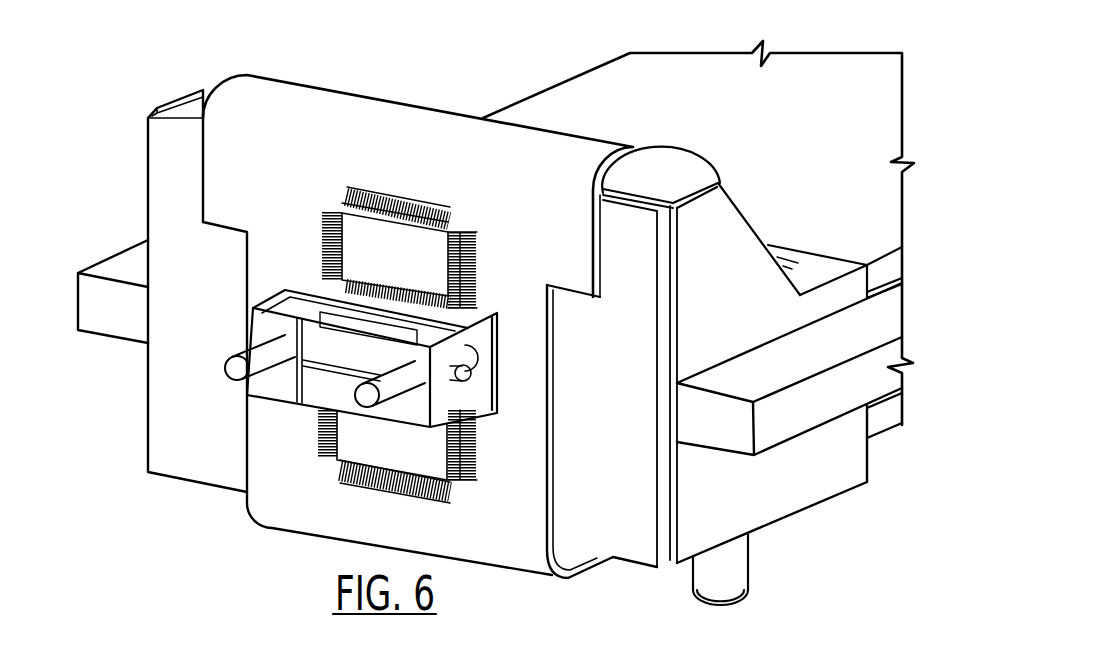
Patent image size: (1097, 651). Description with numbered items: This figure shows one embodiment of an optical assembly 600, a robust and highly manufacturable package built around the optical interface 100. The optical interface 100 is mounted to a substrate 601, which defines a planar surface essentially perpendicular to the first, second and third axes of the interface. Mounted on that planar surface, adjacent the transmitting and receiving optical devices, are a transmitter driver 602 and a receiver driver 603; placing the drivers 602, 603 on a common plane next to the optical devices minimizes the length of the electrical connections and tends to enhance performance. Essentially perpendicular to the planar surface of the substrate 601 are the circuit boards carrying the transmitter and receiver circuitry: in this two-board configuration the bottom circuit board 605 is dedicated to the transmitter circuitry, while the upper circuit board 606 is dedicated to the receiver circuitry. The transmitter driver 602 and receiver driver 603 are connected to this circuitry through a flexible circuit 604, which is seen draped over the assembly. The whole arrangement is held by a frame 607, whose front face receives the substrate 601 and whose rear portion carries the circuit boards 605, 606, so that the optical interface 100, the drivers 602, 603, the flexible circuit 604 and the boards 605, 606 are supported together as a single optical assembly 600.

The optical assembly 600 is at (802, 41).
The substrate 601 is at (157, 145).
The transmitter driver 602 is at (355, 447).
The receiver driver 603 is at (378, 243).
The flexible circuit 604 is at (253, 93).
The bottom circuit board 605 is at (883, 420).
The upper circuit board 606 is at (613, 80).
The frame 607 is at (848, 468).
The optical interface 100 is at (273, 390).